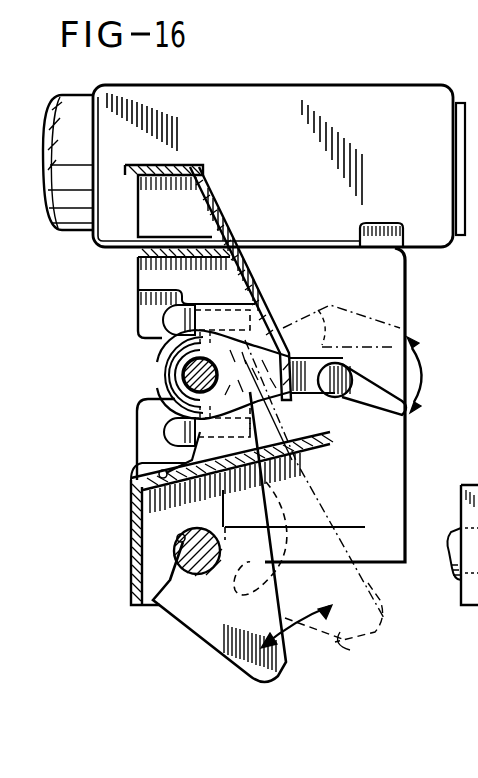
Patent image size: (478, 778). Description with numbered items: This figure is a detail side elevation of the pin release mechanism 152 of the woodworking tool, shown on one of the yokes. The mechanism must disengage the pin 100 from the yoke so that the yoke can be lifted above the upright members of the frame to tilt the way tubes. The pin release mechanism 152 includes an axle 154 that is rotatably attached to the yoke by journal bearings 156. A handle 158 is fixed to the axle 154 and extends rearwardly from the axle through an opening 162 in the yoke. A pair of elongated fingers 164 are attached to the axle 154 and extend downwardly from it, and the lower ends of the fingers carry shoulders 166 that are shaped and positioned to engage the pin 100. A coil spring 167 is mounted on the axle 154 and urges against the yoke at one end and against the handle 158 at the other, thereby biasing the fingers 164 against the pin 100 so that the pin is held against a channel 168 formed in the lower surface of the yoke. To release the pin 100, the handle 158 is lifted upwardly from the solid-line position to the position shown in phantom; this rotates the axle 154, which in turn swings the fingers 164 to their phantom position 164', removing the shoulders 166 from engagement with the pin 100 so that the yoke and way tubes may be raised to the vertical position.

The pin 100 is at (195, 564).
The pin release mechanism 152 is at (150, 377).
The axle 154 is at (140, 368).
The journal bearings 156 is at (140, 430).
The handle 158 is at (349, 318).
The opening 162 is at (264, 330).
The elongated fingers 164 is at (242, 554).
The elongated fingers (phantom position) 164' is at (315, 516).
The shoulders 166 is at (155, 603).
The coil spring 167 is at (160, 338).
The channel 168 is at (131, 530).